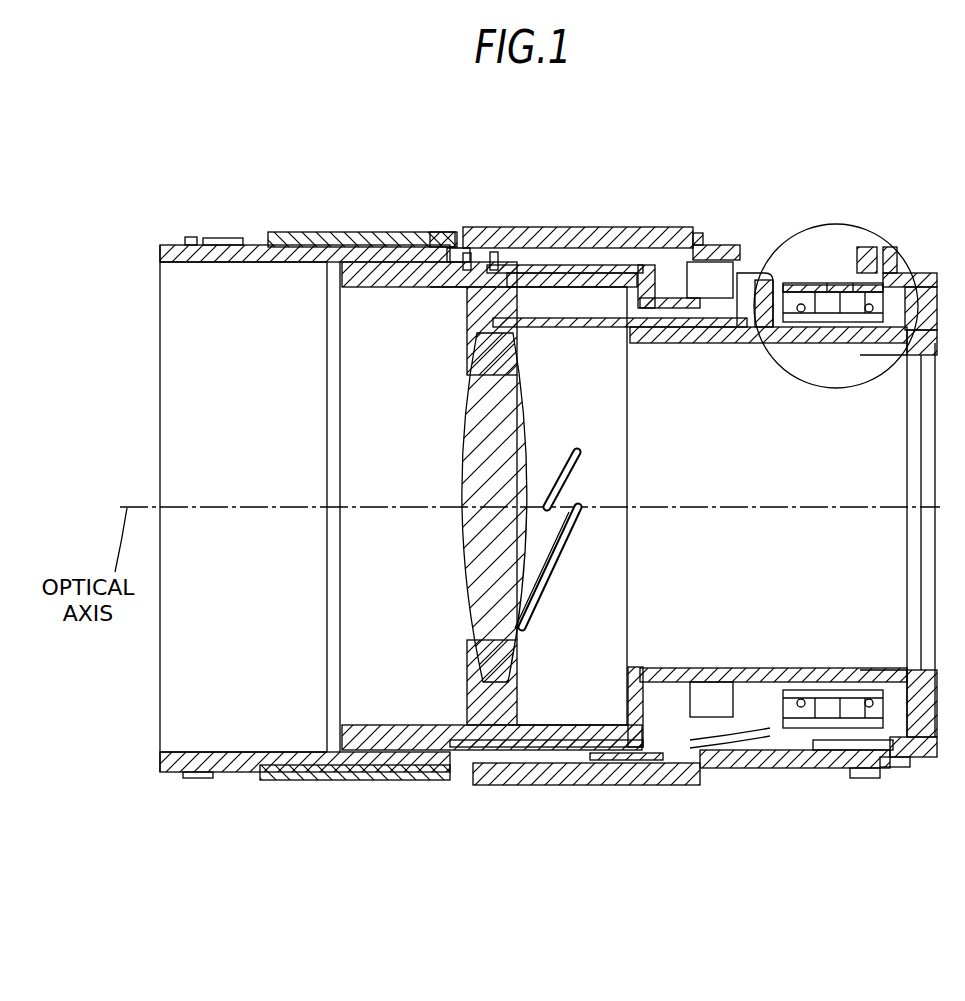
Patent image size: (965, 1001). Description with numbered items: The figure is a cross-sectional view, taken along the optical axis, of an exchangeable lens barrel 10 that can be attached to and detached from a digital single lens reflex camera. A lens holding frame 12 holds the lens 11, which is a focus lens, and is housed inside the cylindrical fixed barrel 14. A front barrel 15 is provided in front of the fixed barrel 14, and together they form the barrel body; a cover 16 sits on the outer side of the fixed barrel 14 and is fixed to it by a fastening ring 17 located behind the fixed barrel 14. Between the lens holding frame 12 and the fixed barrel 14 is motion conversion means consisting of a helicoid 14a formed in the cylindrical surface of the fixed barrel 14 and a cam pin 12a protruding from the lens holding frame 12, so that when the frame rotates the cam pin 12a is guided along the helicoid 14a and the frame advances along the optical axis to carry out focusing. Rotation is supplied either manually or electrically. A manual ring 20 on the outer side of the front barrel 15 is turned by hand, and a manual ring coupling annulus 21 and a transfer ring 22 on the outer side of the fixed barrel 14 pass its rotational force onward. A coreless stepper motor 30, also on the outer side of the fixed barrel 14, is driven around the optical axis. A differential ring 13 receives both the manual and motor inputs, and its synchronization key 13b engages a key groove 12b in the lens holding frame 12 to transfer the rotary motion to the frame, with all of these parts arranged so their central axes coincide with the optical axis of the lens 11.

The exchangeable lens barrel 10 is at (233, 160).
The lens 11 is at (470, 567).
The lens holding frame 12 is at (498, 712).
The cam pin 12a is at (477, 245).
The key groove 12b is at (498, 268).
The differential ring 13 is at (767, 282).
The synchronization key 13b is at (577, 315).
The fixed barrel 14 is at (758, 675).
The helicoid 14a is at (547, 583).
The front barrel 15 is at (213, 765).
The cover 16 is at (683, 785).
The fastening ring 17 is at (915, 725).
The manual ring 20 is at (307, 780).
The manual ring coupling annulus 21 is at (557, 263).
The transfer ring 22 is at (727, 302).
The coreless stepper motor 30 is at (828, 270).